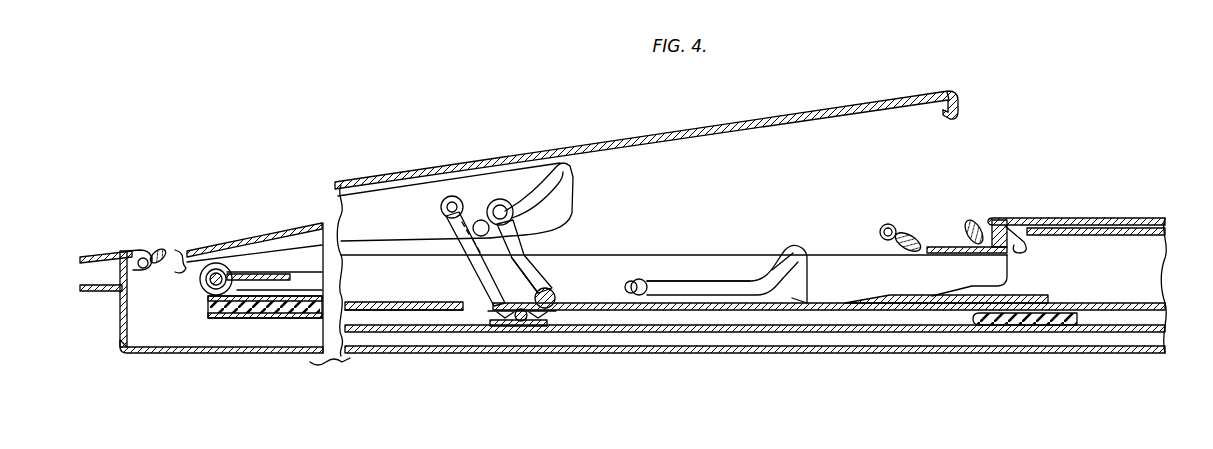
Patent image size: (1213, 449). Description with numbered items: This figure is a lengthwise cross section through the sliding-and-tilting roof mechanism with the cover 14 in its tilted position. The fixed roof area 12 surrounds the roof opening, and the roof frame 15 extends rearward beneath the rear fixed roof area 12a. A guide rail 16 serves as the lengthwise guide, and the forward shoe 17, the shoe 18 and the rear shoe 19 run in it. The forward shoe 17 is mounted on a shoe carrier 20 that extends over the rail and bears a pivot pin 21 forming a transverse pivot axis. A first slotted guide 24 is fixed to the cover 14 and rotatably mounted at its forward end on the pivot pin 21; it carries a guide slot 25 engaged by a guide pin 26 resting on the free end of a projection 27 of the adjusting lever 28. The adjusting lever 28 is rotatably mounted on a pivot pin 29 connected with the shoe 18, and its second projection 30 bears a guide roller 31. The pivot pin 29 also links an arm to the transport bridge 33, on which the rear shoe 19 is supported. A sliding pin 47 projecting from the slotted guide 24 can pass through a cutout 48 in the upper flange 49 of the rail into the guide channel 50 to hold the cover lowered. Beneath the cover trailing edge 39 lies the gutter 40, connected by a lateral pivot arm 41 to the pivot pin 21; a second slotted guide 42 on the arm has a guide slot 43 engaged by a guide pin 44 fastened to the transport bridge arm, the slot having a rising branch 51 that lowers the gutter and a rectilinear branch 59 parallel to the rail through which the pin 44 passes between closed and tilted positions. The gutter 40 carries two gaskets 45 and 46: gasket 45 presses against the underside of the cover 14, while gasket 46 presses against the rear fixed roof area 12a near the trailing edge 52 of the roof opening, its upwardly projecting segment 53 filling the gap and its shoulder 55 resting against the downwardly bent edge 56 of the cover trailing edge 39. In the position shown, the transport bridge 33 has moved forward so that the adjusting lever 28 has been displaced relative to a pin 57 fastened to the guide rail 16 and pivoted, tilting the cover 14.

The fixed roof area 12 is at (111, 254).
The rear fixed roof area 12a is at (1105, 218).
The cover 14 is at (678, 130).
The roof frame 15 is at (173, 354).
The guide rail 16 is at (957, 354).
The forward shoe 17 is at (273, 312).
The shoe 18 is at (518, 317).
The rear shoe 19 is at (1077, 317).
The shoe carrier 20 is at (273, 287).
The pivot pin 21 is at (215, 263).
The first slotted guide 24 is at (365, 208).
The guide slot 25 is at (552, 193).
The guide pin 26 is at (502, 205).
The projection 27 is at (517, 247).
The adjusting lever 28 is at (547, 288).
The pivot pin 29 is at (519, 320).
The second projection 30 is at (447, 227).
The guide roller 31 is at (450, 196).
The transport bridge 33 is at (1033, 294).
The cover trailing edge 39 is at (947, 91).
The gutter 40 is at (948, 243).
The pivot arm 41 is at (848, 261).
The second slotted guide 42 is at (792, 298).
The guide slot 43 is at (725, 288).
The guide pin 44 is at (638, 279).
The gasket 45 is at (880, 233).
The gasket 46 is at (1028, 243).
The sliding pin 47 is at (480, 220).
The cutout 48 is at (470, 302).
The upper flange 49 is at (433, 311).
The guide channel 50 is at (918, 333).
The rising branch 51 is at (782, 270).
The trailing edge 52 is at (981, 218).
The upwardly projecting segment 53 is at (970, 227).
The shoulder 55 is at (963, 243).
The downwardly bent edge 56 is at (958, 115).
The pin 57 is at (560, 294).
The branch 59 is at (667, 288).